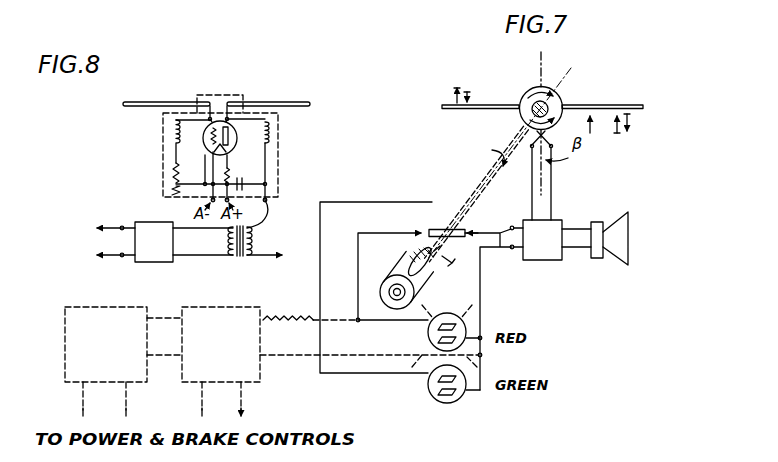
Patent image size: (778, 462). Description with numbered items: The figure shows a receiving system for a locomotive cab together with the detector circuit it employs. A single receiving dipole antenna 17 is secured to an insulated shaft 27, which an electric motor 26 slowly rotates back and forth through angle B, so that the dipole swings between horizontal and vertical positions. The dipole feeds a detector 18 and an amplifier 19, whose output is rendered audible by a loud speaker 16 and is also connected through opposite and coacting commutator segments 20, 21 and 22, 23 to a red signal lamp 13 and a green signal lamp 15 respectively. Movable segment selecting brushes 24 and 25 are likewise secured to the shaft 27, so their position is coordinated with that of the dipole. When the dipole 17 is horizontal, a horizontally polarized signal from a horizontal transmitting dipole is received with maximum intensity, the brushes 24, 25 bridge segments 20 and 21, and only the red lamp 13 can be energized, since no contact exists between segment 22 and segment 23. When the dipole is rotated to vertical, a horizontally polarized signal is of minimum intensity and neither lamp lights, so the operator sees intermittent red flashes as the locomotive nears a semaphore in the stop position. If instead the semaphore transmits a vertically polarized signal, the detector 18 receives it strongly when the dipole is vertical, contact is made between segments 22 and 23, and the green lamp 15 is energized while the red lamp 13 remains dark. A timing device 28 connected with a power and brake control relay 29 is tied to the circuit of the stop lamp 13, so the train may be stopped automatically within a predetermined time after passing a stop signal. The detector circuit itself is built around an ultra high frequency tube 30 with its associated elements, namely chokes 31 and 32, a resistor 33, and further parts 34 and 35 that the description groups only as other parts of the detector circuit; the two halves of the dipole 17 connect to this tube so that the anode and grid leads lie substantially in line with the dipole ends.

In FIG. 7, the red signal indicator lamp 13 is at (433, 331).
In FIG. 7, the green signal indicator lamp 15 is at (462, 380).
In FIG. 7, the loud speaker 16 is at (629, 238).
In FIG. 7, the dipole antenna 17 is at (633, 103).
In FIG. 8, the dipole antenna 17 is at (277, 102).
In FIG. 7, the detector 18 is at (567, 101).
In FIG. 8, the detector 18 is at (221, 94).
In FIG. 7, the amplifier 19 is at (554, 221).
In FIG. 8, the amplifier 19 is at (163, 223).
In FIG. 7, the commutator segment 20 is at (469, 229).
In FIG. 7, the commutator segment 21 is at (424, 230).
In FIG. 7, the commutator segment 22 is at (463, 260).
In FIG. 7, the commutator segment 23 is at (445, 209).
In FIG. 7, the segment selecting brush 24 is at (455, 264).
In FIG. 7, the segment selecting brush 25 is at (428, 246).
In FIG. 7, the electric motor 26 is at (388, 281).
In FIG. 7, the insulated shaft 27 is at (483, 176).
In FIG. 8, the timing device 28 is at (261, 366).
In FIG. 8, the power and brake control relay 29 is at (105, 306).
In FIG. 8, the ultra high frequency tube 30 is at (228, 125).
In FIG. 8, the choke 31 is at (273, 138).
In FIG. 8, the choke 32 is at (170, 133).
In FIG. 8, the resistor 33 is at (170, 178).
In FIG. 8, the capacitor 34 is at (243, 177).
In FIG. 8, the transformer 35 is at (240, 258).